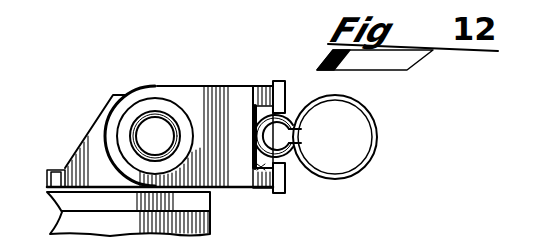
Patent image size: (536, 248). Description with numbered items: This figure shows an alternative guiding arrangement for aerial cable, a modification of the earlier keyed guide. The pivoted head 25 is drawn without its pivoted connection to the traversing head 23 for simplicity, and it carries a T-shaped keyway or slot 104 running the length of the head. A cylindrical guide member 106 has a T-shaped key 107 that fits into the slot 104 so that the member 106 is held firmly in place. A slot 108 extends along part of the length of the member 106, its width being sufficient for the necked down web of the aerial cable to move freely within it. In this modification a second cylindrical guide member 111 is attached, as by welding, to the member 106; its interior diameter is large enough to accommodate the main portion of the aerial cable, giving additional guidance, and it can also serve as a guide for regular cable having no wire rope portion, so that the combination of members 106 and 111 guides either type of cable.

The traversing head 23 is at (210, 228).
The pivoted head 25 is at (190, 86).
The T-shaped keyway 104 is at (258, 107).
The cylindrical guide member 106 is at (297, 168).
The T-shaped key 107 is at (252, 190).
The slot 108 is at (300, 107).
The cylindrical guide member 111 is at (375, 117).